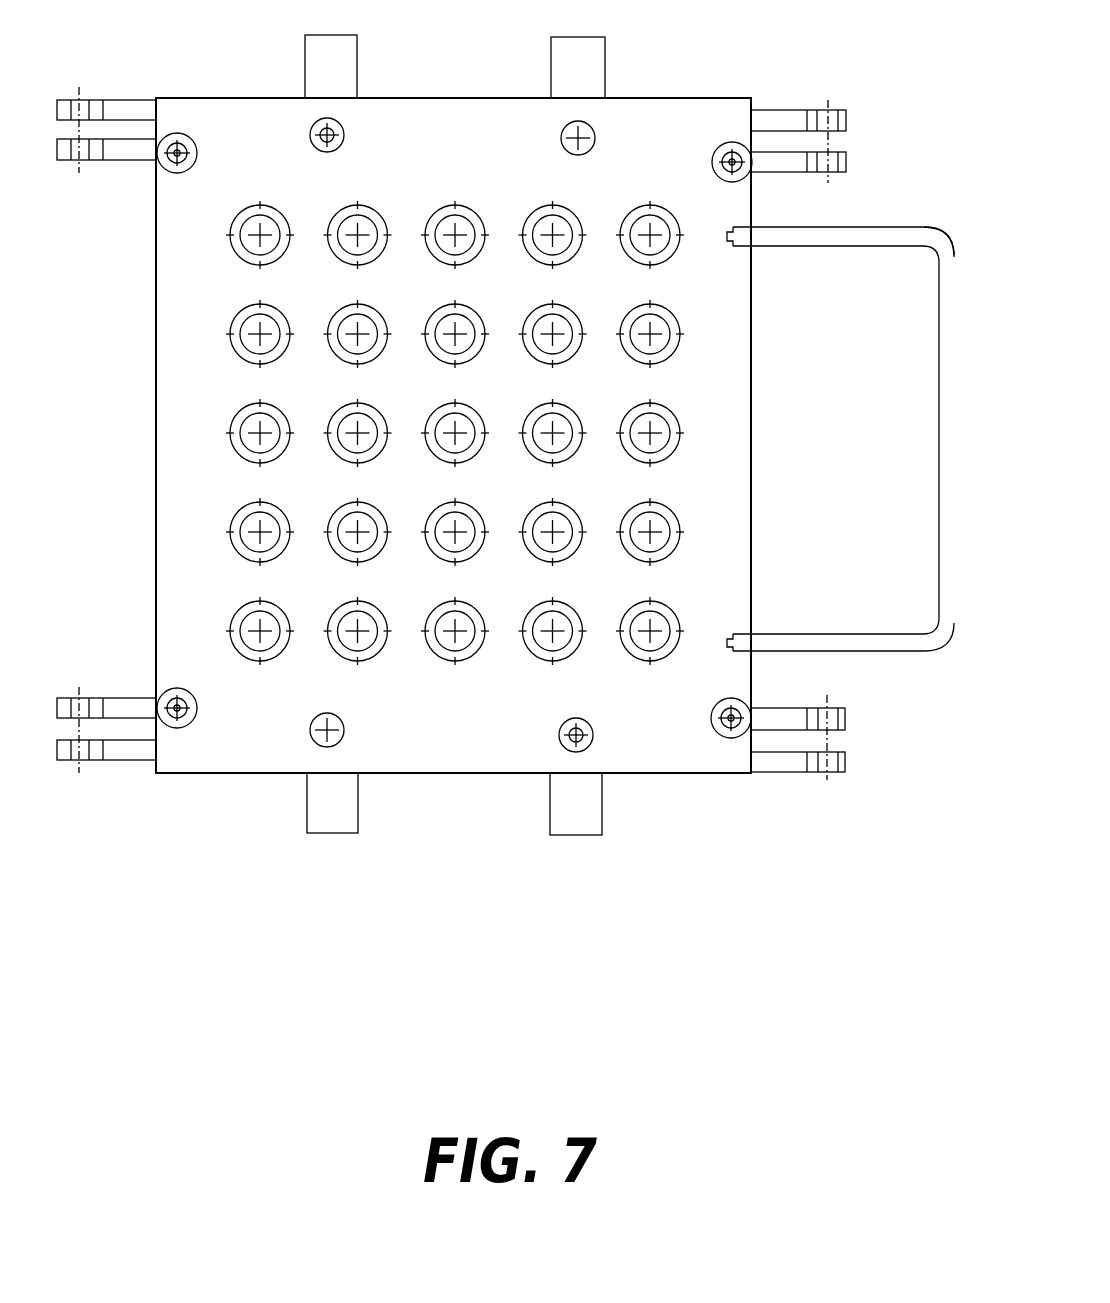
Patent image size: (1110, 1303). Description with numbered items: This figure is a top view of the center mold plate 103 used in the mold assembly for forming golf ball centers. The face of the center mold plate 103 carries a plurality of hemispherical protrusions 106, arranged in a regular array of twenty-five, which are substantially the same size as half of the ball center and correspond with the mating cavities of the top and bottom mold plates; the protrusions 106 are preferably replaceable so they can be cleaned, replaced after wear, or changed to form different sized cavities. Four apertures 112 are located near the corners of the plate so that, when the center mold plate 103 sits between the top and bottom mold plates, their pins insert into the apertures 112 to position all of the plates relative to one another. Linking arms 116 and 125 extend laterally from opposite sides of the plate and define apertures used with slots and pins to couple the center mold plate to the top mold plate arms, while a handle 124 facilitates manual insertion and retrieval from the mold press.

The center mold plate 103 is at (476, 58).
The protrusions 106 is at (267, 227).
The apertures 112 is at (342, 145).
The linking arms 116 is at (783, 110).
The handles 124 is at (806, 633).
The linking arms 125 is at (130, 100).